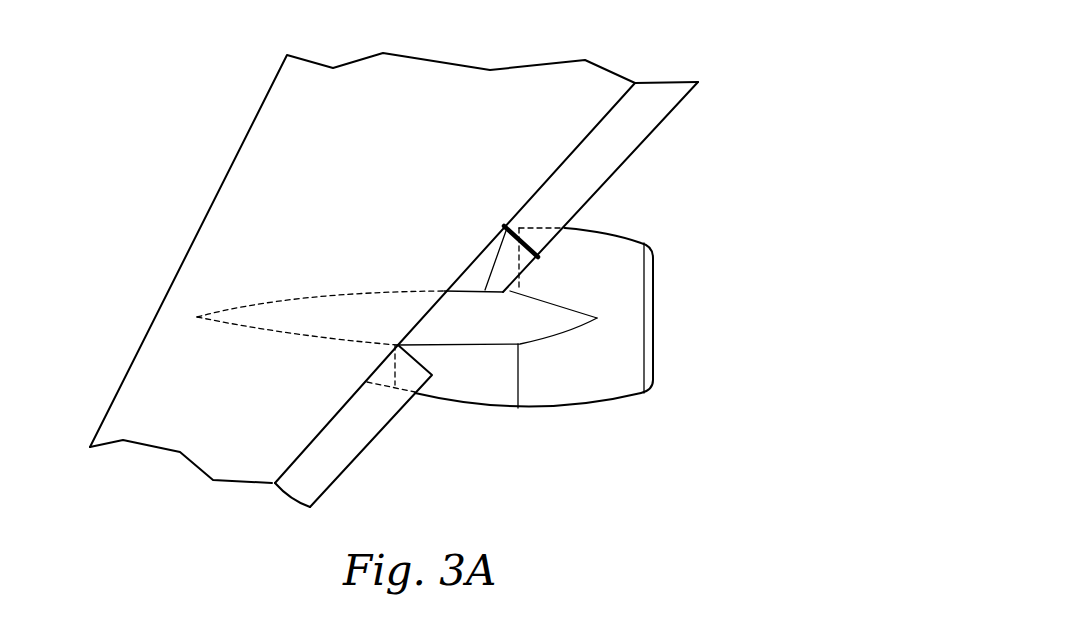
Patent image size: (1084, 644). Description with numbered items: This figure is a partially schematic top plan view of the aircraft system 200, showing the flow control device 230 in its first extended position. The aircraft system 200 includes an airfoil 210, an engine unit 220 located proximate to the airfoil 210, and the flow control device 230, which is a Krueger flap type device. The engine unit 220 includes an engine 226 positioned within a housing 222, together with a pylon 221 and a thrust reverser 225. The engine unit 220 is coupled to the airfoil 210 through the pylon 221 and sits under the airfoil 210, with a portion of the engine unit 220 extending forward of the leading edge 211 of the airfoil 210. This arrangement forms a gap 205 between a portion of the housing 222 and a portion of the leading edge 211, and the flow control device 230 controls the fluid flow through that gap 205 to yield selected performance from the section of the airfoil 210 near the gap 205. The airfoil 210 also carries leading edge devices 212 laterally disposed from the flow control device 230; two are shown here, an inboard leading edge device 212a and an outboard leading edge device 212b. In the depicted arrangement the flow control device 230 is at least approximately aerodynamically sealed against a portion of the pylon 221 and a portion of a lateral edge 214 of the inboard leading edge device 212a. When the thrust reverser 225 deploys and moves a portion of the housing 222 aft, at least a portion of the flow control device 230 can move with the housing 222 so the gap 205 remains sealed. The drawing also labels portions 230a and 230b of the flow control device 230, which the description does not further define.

The aircraft system 200 is at (618, 40).
The gap 205 is at (562, 282).
The airfoil 210 is at (253, 160).
The leading edge 211 is at (495, 236).
The leading edge device 212 is at (531, 310).
The inboard leading edge device 212a is at (630, 127).
The outboard leading edge device 212b is at (354, 437).
The lateral edge 214 is at (537, 233).
The engine unit 220 is at (567, 374).
The pylon 221 is at (447, 315).
The housing 222 is at (550, 393).
The thrust reverser 225 is at (510, 380).
The engine 226 is at (550, 392).
The flow control device 230 is at (553, 296).
The blade cutting edge 230a is at (487, 263).
The blade back edge 230b is at (510, 283).